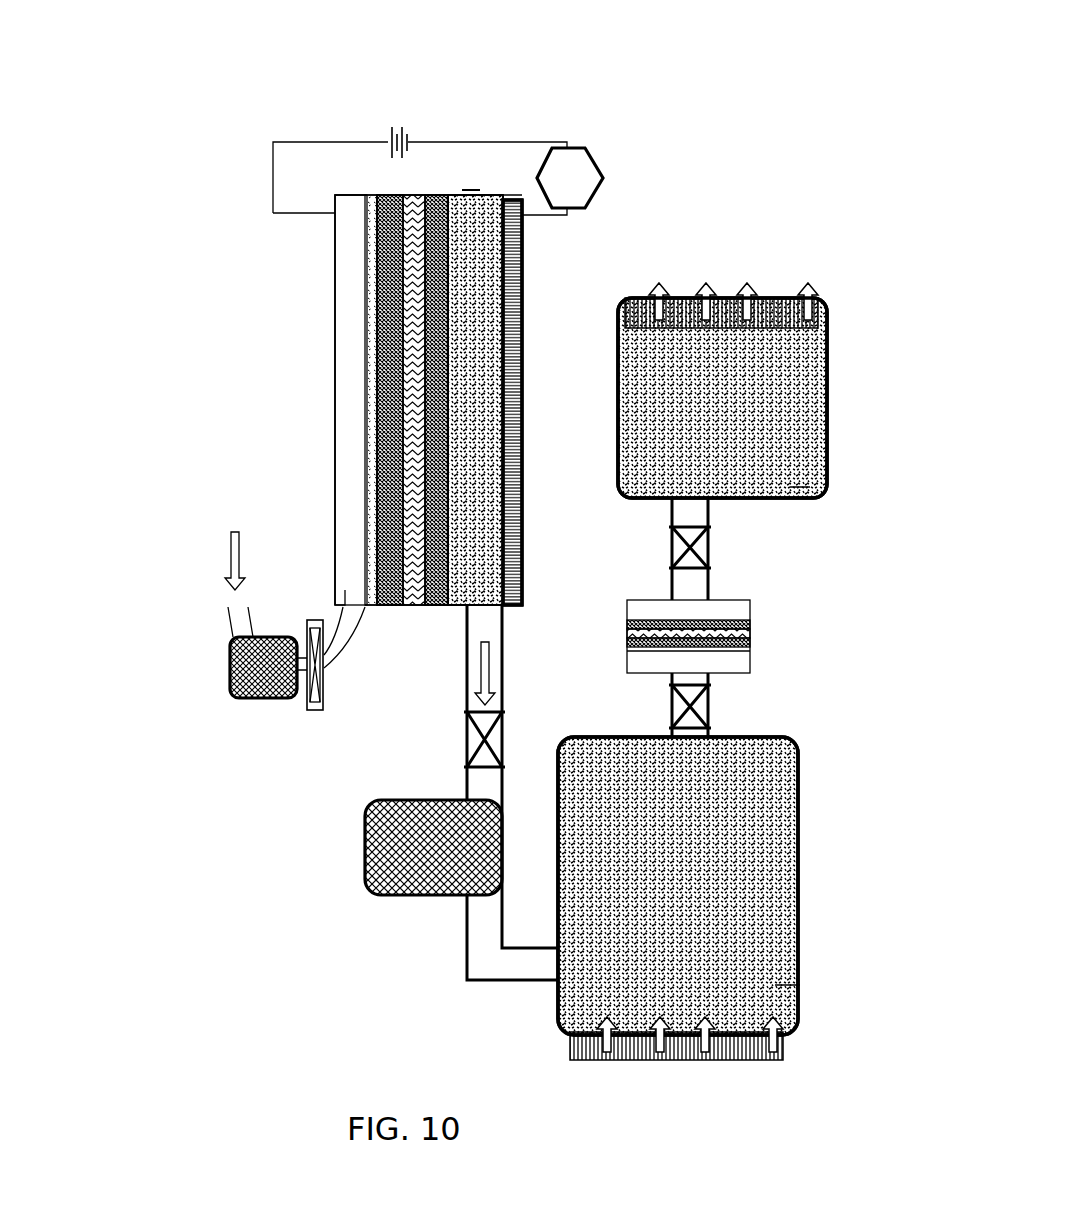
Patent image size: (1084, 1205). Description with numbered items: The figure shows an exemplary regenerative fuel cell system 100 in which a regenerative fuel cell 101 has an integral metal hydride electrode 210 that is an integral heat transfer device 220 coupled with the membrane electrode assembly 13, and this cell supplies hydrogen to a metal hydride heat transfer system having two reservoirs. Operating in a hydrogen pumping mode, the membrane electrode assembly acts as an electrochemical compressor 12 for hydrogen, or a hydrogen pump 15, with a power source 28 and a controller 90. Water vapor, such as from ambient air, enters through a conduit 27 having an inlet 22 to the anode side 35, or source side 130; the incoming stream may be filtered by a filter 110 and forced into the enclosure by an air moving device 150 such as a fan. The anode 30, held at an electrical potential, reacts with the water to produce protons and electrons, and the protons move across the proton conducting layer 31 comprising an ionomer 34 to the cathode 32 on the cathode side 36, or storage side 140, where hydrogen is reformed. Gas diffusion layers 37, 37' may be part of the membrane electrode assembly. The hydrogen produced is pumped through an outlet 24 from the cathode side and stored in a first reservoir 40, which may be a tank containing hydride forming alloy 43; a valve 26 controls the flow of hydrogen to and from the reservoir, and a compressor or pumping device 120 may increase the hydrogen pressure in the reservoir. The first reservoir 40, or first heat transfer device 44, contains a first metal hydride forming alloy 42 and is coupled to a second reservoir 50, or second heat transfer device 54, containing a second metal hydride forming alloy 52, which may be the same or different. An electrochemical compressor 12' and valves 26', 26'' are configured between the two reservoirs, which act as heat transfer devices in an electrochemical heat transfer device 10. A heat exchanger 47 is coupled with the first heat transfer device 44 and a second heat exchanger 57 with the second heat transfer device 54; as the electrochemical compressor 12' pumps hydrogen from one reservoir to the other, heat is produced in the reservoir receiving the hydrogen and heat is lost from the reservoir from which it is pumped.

The regenerative fuel cell system 100 is at (285, 116).
The electrochemical compressor 12 is at (257, 337).
The hydrogen pump 15 is at (352, 222).
The power source 28 is at (440, 142).
The controller 90 is at (565, 172).
The regenerative fuel cell 101 is at (358, 278).
The source side 130 is at (368, 298).
The anode side 35 is at (378, 350).
The anode 30 is at (378, 375).
The membrane electrode assembly 13 is at (378, 455).
The gas diffusion layer 37 is at (343, 400).
The storage side 140 is at (470, 535).
The cathode side 36 is at (475, 318).
The cathode 32 is at (455, 395).
The gas diffusion layer 37' is at (529, 400).
The outlet 24 is at (522, 598).
The integral metal hydride electrode 210 is at (490, 238).
The integral heat transfer device 220 is at (487, 270).
The filter 110 is at (232, 676).
The conduit 27 is at (233, 602).
The air moving device 150 is at (312, 712).
The inlet 22 is at (336, 590).
The proton conducting layer 31 is at (400, 607).
The ionomer 34 is at (425, 607).
The valve 26 is at (523, 792).
The compressor or pumping device 120 is at (378, 860).
The second reservoir 50 is at (800, 397).
The second heat exchanger 57 is at (775, 298).
The electrochemical heat transfer device 10 is at (822, 305).
The second heat transfer device 54 is at (795, 335).
The second metal hydride forming alloy 52 is at (795, 450).
The hydride forming alloy 43 is at (795, 485).
The valve 26'' is at (746, 549).
The electrochemical compressor 12' is at (739, 631).
The valve 26' is at (739, 705).
The first reservoir 40 is at (775, 843).
The first heat transfer device 44 is at (772, 787).
The first metal hydride forming alloy 42 is at (778, 930).
The heat exchanger 47 is at (750, 1062).